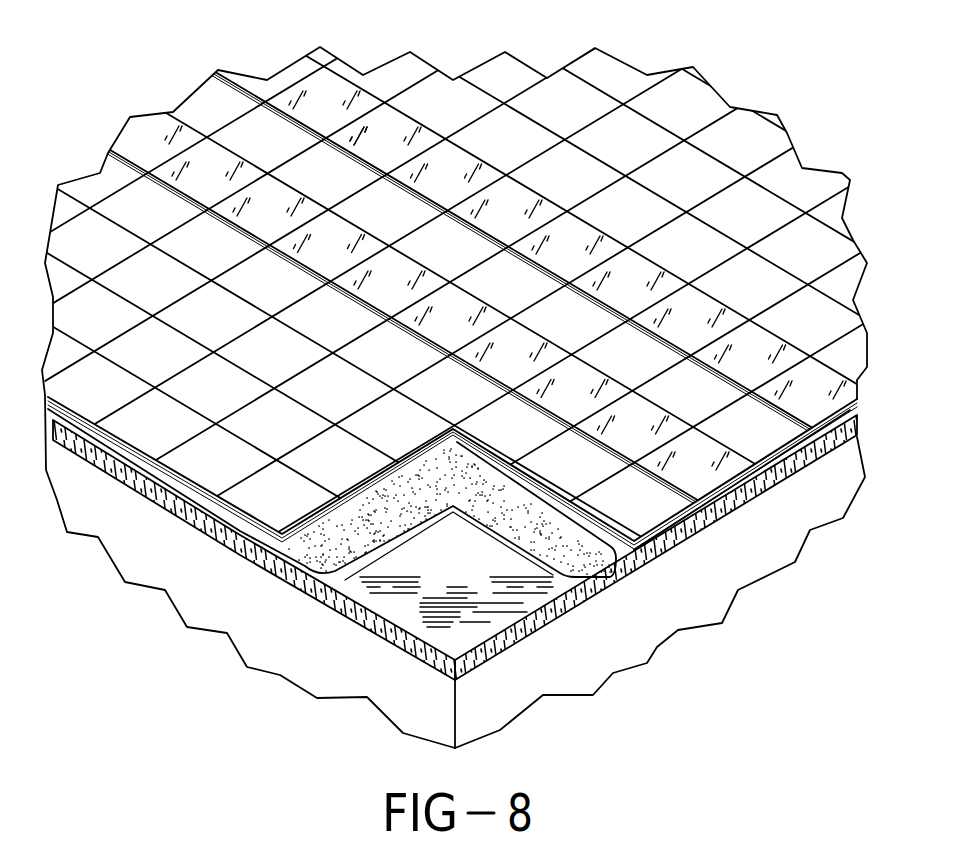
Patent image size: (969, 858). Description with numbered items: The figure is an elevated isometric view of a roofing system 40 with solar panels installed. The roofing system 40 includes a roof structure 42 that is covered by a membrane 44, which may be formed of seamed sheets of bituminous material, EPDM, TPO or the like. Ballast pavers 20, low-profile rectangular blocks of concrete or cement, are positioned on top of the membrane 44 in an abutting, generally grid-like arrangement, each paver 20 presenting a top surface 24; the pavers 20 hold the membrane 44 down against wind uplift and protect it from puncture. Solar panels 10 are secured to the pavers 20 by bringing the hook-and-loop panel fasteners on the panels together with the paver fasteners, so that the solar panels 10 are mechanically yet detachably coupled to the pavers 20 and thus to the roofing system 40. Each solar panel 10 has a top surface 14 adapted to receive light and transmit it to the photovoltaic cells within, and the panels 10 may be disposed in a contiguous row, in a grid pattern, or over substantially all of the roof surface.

The modified solar panel 10 is at (148, 141).
The top surface 14 is at (392, 132).
The top surface 24 is at (687, 93).
The ballast paver 20 is at (742, 495).
The roofing system 40 is at (665, 569).
The roof structure 42 is at (477, 628).
The membrane 44 is at (333, 542).